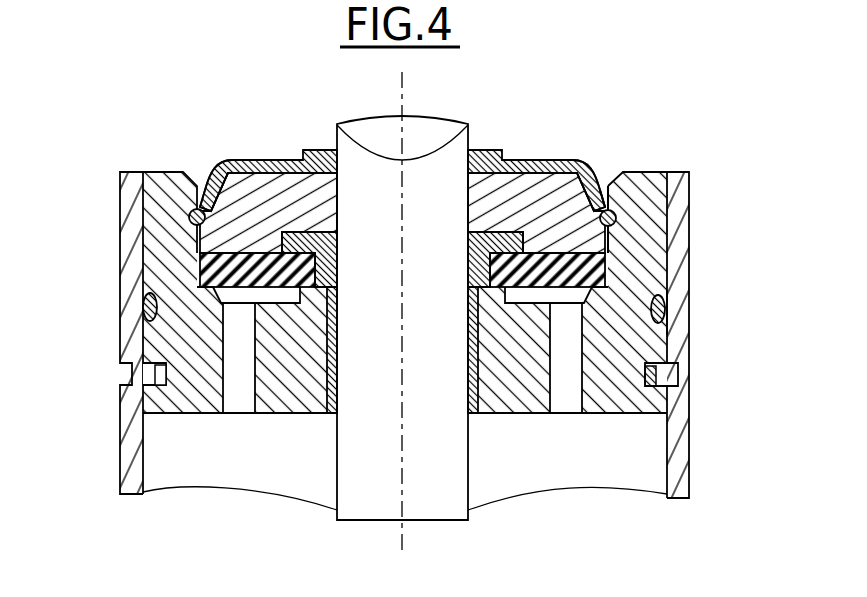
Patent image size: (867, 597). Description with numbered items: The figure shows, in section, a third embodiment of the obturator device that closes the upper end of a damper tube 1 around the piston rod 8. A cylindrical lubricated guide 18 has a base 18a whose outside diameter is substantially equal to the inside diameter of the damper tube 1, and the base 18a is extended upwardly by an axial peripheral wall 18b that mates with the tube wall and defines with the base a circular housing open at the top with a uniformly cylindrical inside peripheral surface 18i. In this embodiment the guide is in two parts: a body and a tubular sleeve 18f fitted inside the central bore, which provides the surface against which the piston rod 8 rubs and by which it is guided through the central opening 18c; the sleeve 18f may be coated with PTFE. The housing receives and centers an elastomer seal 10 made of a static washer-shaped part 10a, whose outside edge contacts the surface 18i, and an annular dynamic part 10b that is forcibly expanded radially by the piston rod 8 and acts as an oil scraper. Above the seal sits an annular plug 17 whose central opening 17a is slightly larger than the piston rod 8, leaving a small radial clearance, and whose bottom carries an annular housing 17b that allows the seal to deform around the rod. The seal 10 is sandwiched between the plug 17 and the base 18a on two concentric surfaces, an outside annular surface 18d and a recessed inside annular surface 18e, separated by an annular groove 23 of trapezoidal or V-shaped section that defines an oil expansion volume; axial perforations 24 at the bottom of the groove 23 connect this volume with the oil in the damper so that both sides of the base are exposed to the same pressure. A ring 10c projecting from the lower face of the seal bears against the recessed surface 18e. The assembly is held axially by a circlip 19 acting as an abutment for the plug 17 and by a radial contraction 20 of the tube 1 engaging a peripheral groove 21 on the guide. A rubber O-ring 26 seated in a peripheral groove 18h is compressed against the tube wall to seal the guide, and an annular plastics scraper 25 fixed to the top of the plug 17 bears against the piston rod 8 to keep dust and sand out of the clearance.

The damper tube 1 is at (678, 462).
The piston rod 8 is at (352, 158).
The seal 10 is at (580, 274).
The static part 10a is at (200, 268).
The dynamic part 10b is at (280, 240).
The ring 10c is at (488, 230).
The annular plug 17 is at (532, 208).
The central opening 17a is at (337, 203).
The annular housing 17b is at (228, 165).
The lubricated guide 18 is at (306, 372).
The guide base 18a is at (532, 378).
The axial peripheral wall 18b is at (637, 198).
The central opening 18c is at (340, 342).
The outside annular surface 18d is at (613, 380).
The inside annular surface 18e is at (500, 412).
The tubular sleeve 18f is at (470, 412).
The peripheral groove 18h is at (650, 322).
The inside peripheral surface 18i is at (612, 243).
The circlip 19 is at (618, 221).
The radial contraction 20 is at (658, 372).
The peripheral groove 21 is at (658, 383).
The annular groove 23 is at (586, 178).
The axial perforations 24 is at (240, 337).
The scraper 25 is at (592, 185).
The O-ring 26 is at (630, 319).